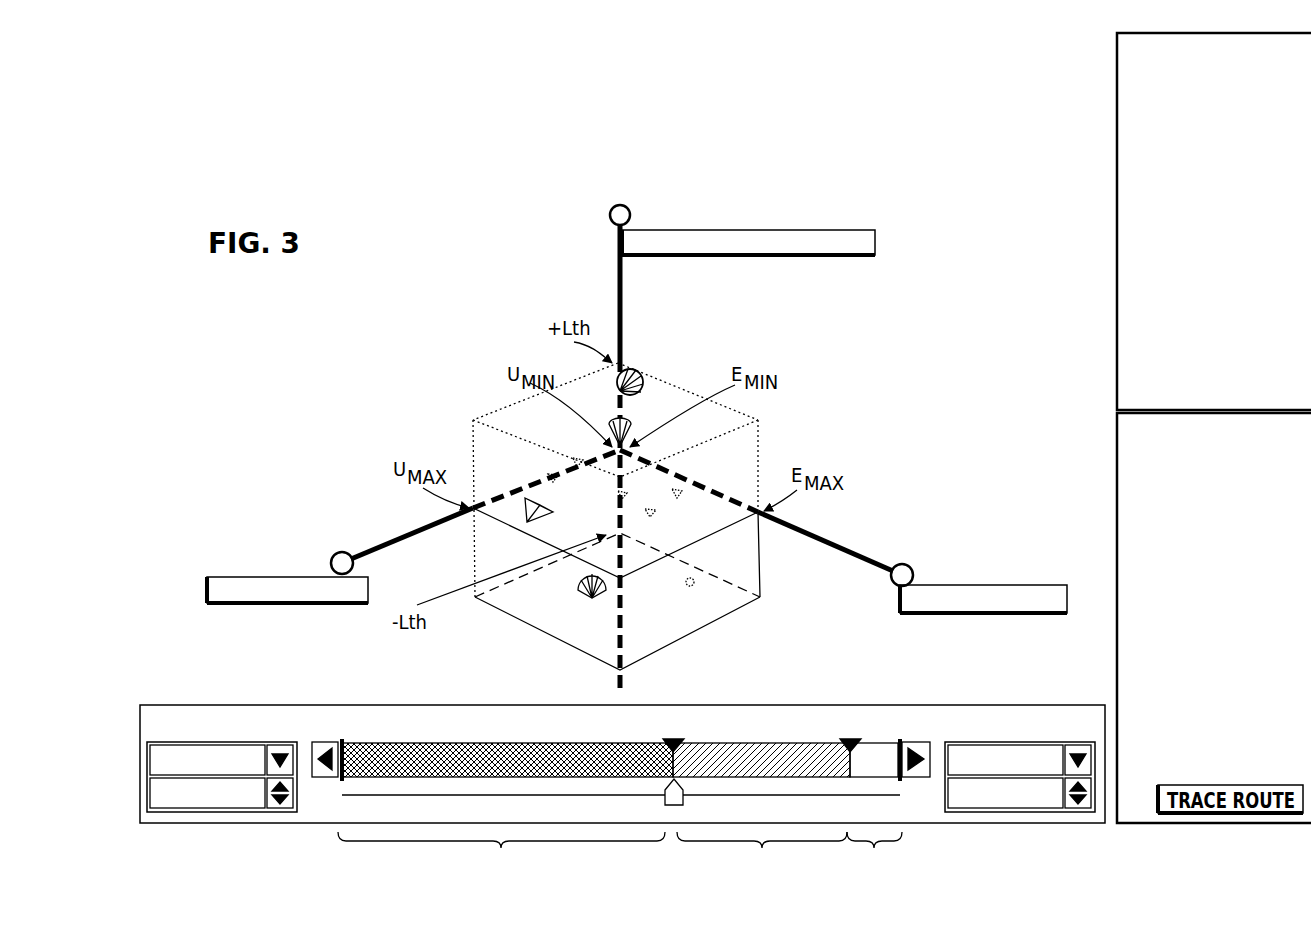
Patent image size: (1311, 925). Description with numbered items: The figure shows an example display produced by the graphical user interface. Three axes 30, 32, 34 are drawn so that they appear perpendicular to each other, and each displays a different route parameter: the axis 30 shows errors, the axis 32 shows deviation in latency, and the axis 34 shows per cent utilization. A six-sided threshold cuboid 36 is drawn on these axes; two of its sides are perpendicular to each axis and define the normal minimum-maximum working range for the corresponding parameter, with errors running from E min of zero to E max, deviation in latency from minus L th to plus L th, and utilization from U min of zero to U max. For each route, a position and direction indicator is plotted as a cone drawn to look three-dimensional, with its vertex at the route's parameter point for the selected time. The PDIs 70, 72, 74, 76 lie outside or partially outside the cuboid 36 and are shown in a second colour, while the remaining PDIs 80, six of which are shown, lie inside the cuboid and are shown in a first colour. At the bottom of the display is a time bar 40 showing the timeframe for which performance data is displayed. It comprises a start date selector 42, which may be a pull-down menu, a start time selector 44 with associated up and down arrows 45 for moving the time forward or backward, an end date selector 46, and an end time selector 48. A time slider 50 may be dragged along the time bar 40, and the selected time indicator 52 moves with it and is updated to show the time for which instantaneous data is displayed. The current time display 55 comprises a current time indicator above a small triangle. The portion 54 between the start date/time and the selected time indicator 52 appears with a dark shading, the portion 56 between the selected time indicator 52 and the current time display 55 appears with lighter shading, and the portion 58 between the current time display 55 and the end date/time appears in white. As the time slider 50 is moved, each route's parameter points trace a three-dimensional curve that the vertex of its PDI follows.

The axis 30 is at (853, 548).
The axis 32 is at (623, 285).
The axis 34 is at (393, 538).
The threshold cuboid 36 is at (762, 437).
The time bar 40 is at (473, 745).
The start date selector 42 is at (212, 743).
The start time selector 44 is at (253, 807).
The up and down arrows 45 is at (293, 813).
The end date selector 46 is at (1012, 744).
The end time selector 48 is at (1053, 808).
The time slider 50 is at (677, 808).
The selected time indicator 52 is at (710, 722).
The portion of the time bar 54 is at (501, 855).
The current time display 55 is at (848, 705).
The portion of the time bar 56 is at (762, 855).
The portion of the time bar 58 is at (874, 855).
The PDI 70 is at (637, 373).
The PDI 72 is at (613, 425).
The PDI 74 is at (580, 596).
The PDI 76 is at (527, 522).
The PDIs 80 is at (574, 461).